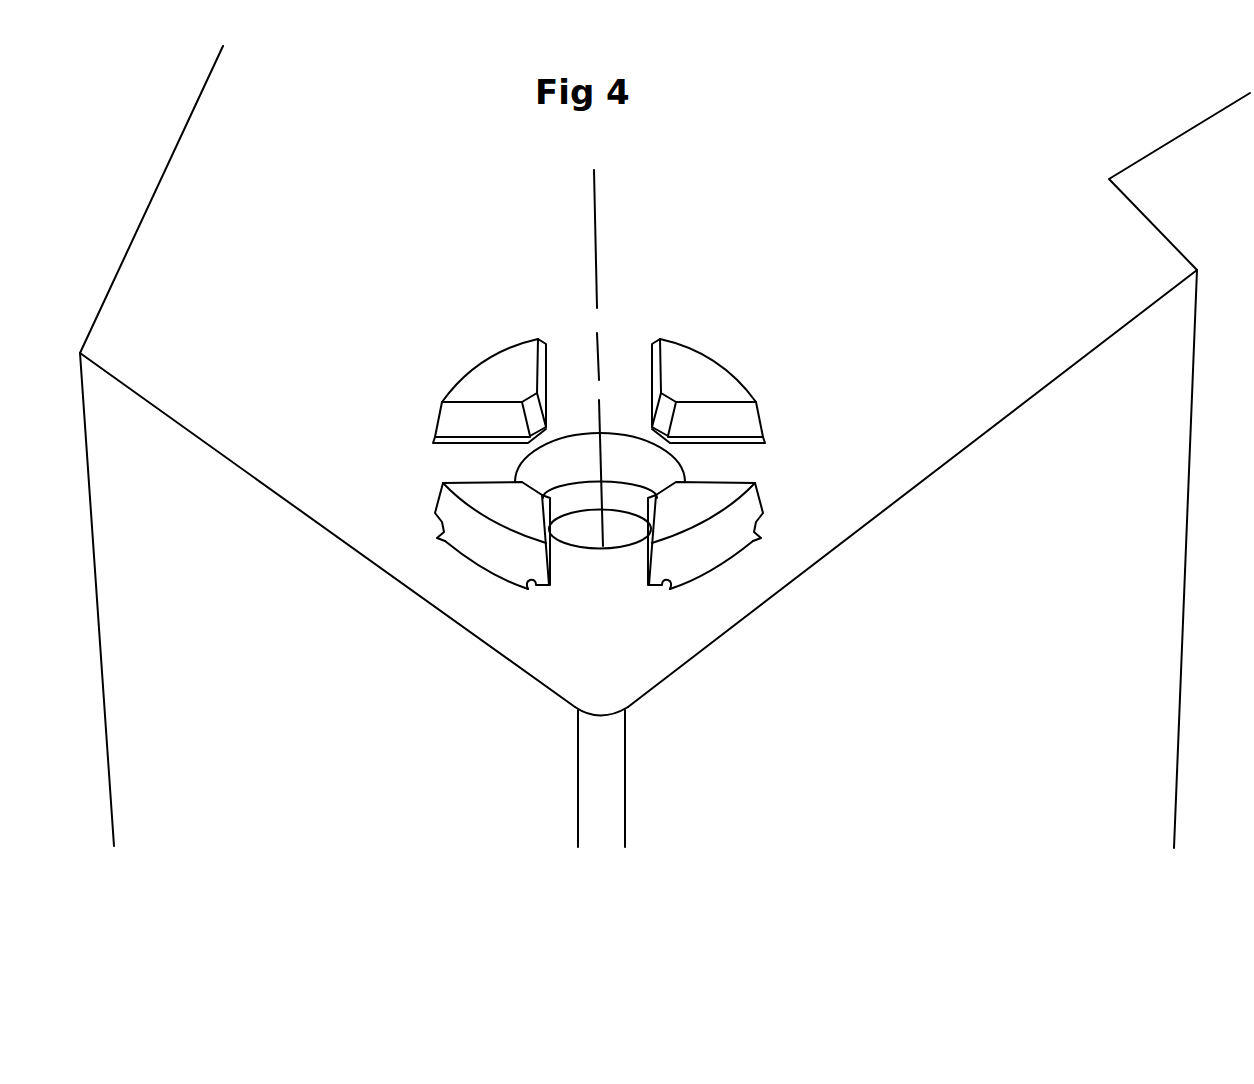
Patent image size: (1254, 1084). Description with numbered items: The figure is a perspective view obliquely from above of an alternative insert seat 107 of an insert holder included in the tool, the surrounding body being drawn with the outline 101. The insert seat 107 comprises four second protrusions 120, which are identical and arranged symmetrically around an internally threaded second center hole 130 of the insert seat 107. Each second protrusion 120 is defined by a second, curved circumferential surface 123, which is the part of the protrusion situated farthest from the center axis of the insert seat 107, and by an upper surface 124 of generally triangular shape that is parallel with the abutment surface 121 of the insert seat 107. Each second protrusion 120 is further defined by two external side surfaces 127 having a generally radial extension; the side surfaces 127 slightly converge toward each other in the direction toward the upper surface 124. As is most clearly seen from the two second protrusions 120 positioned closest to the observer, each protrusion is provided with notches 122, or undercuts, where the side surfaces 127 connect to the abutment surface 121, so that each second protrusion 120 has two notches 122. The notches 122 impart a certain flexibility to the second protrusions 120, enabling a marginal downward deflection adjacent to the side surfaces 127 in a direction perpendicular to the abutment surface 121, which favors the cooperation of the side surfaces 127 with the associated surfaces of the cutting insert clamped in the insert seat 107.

The tool body / plate 101 is at (182, 106).
The insert seat 107 is at (418, 406).
The second protrusion 120 is at (762, 492).
The abutment surface 121 is at (575, 657).
The notch 122 is at (437, 529).
The second curved circumferential surface 123 is at (735, 540).
The upper surface 124 is at (692, 505).
The external side surface 127 is at (737, 418).
The second center hole 130 is at (620, 497).